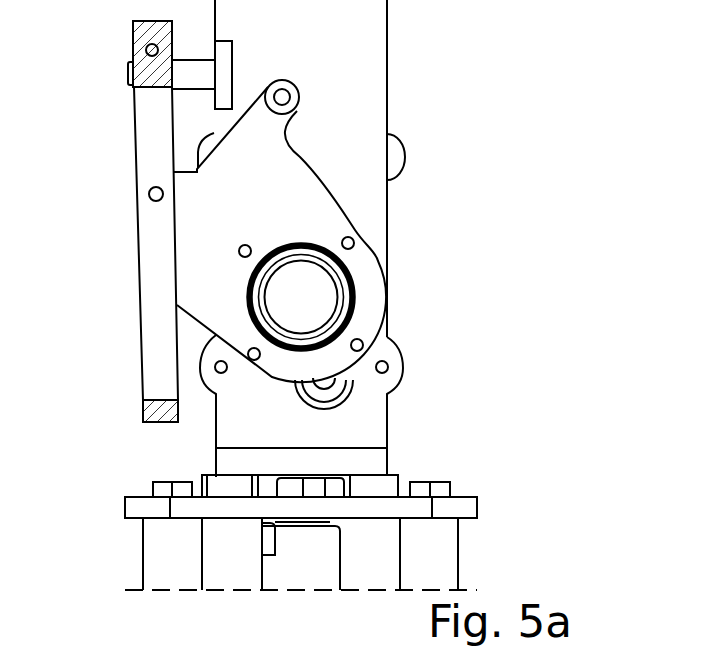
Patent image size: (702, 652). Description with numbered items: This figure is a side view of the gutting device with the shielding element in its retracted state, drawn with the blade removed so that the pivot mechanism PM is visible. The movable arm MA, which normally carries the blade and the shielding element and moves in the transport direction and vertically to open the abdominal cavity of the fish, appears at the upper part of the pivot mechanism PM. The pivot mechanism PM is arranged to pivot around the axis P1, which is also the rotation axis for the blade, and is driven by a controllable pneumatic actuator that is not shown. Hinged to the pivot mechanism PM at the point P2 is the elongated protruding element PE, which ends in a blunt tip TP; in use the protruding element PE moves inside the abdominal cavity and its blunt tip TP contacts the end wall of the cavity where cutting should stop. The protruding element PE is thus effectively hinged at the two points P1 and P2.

The movable arm MA is at (294, 80).
The pivot mechanism PM is at (280, 234).
The axis P1 is at (301, 298).
The point P2 is at (150, 197).
The protruding element PE is at (155, 285).
The blunt tip TP is at (147, 412).